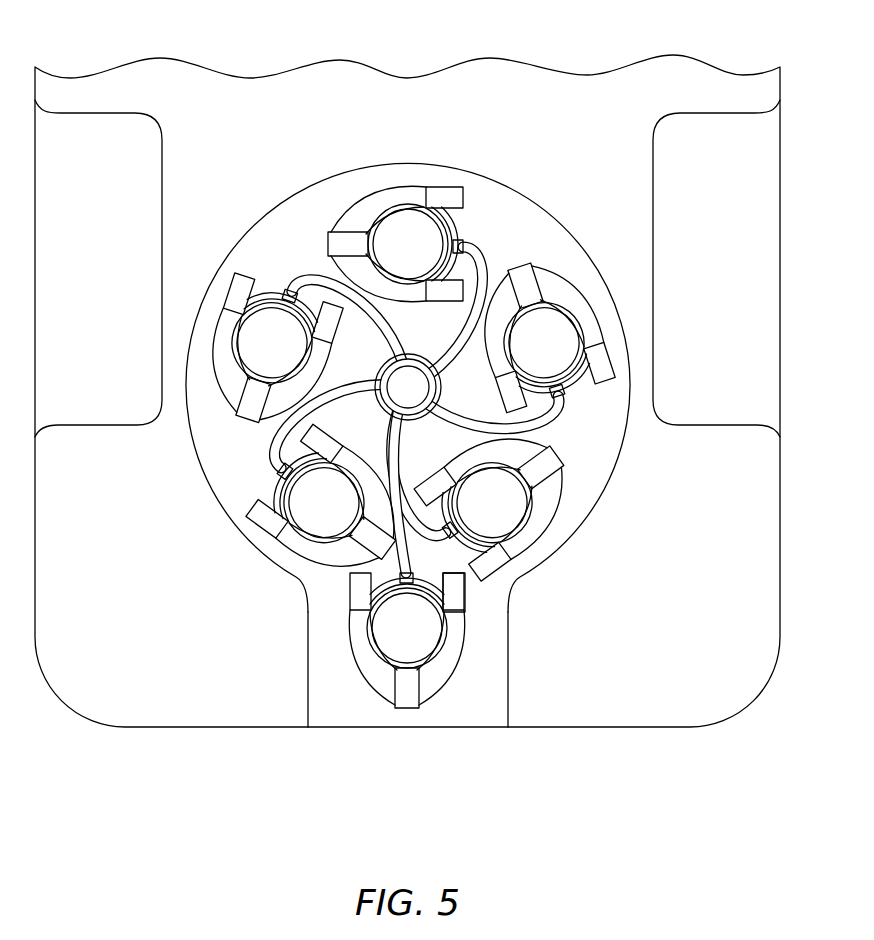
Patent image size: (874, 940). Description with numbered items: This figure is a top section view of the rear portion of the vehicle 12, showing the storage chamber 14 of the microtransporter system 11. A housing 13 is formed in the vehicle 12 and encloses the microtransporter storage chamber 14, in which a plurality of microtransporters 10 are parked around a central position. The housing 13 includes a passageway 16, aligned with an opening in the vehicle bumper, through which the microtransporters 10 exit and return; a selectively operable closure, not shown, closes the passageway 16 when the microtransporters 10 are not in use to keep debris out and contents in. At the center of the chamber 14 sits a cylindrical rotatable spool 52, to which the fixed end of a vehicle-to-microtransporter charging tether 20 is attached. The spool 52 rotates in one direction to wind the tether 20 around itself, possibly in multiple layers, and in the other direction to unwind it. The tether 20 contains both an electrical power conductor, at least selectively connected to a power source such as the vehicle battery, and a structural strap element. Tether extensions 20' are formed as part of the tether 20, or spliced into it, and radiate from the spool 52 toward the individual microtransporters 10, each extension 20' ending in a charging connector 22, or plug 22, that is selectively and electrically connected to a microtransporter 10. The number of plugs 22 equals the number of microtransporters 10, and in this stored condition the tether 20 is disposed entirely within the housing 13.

The microtransporter 10 is at (404, 447).
The microtransporter system 11 is at (447, 368).
The vehicle 12 is at (782, 540).
The housing 13 is at (277, 197).
The microtransporter storage chamber 14 is at (202, 478).
The passageway 16 is at (313, 693).
The vehicle-to-microtransporter charging tether 20 is at (415, 405).
The tether extension 20' is at (400, 446).
The charging connector 22 is at (443, 577).
The rotatable spool 52 is at (432, 381).